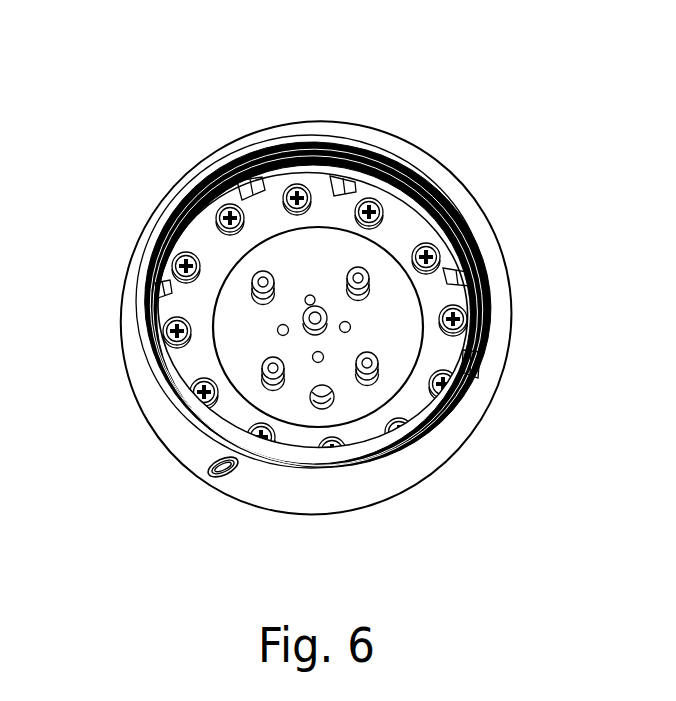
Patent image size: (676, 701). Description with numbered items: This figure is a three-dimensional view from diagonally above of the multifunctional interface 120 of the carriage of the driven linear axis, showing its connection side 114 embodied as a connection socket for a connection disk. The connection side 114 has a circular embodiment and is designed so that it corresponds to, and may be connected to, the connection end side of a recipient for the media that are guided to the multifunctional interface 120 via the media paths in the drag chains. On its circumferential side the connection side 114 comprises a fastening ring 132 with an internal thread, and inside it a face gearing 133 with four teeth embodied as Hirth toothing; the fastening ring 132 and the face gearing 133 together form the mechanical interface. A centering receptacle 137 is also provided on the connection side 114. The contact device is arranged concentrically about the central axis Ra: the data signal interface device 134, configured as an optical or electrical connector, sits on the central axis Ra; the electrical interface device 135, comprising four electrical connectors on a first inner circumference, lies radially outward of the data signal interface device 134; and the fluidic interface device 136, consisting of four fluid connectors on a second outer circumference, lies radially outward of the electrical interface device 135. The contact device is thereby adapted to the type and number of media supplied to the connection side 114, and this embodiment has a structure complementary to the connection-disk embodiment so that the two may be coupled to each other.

The multifunctional interface 120 is at (409, 116).
The connection side 114 is at (492, 233).
The fastening ring 132 is at (440, 183).
The face gearing 133 is at (243, 153).
The data signal interface device 134 is at (303, 320).
The electrical interface device 135 is at (311, 296).
The fluidic interface device 136 is at (256, 270).
The centering receptacle 137 is at (336, 404).
The central axis Ra is at (230, 607).